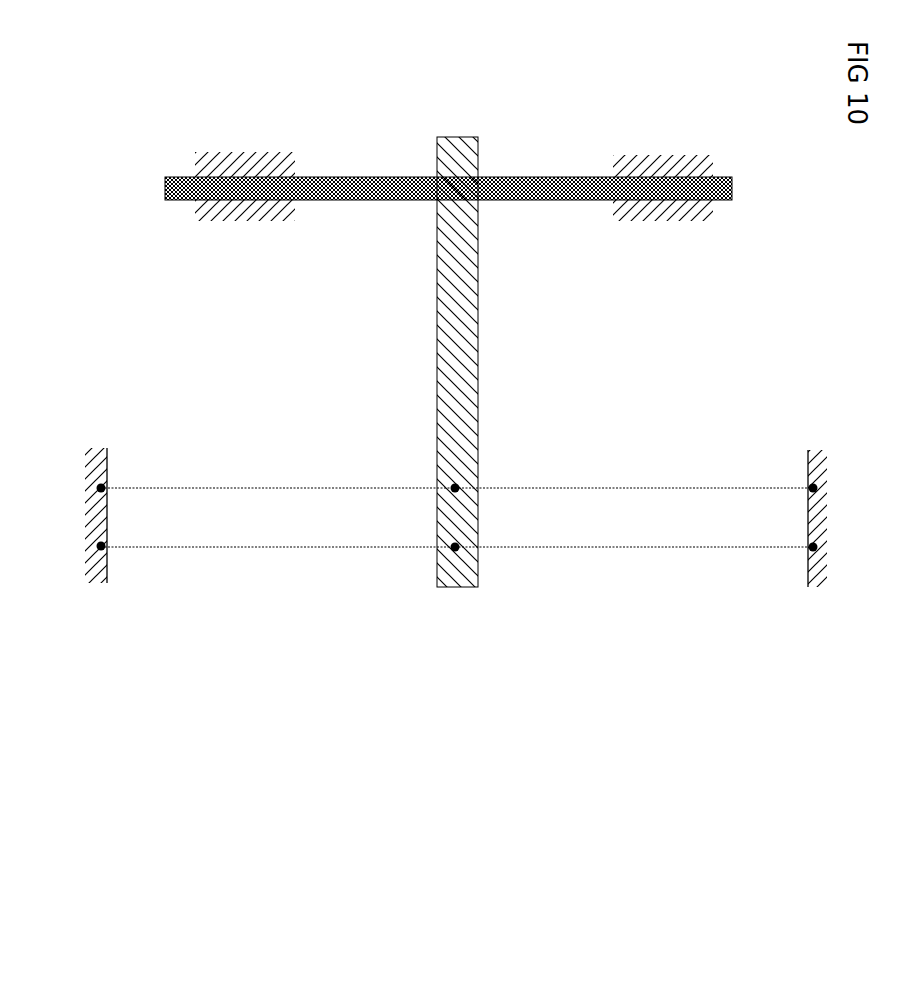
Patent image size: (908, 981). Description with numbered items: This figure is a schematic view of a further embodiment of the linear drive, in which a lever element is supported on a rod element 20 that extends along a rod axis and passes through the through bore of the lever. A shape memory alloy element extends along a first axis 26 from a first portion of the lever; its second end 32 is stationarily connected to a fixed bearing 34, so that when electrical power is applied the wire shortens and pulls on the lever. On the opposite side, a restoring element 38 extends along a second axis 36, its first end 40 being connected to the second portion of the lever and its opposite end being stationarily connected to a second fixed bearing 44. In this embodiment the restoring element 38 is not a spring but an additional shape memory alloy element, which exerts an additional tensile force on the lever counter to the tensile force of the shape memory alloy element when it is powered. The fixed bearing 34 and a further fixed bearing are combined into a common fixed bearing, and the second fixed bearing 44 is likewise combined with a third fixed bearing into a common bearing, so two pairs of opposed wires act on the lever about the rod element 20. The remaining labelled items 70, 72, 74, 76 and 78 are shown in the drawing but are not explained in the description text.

The rod element 20 is at (367, 185).
The central post 72 is at (452, 586).
The linkage assembly 70 is at (462, 553).
The second axis 36 is at (98, 584).
The restoring element 38 is at (823, 582).
The fixed bearing 34 is at (304, 488).
The upper right link 74 is at (582, 488).
The second end 32 is at (309, 548).
The first axis 26 is at (541, 548).
The first end 40 is at (90, 472).
The second fixed bearing 44 is at (827, 474).
The upper central pivot 78 is at (431, 474).
The lower central pivot 76 is at (430, 535).